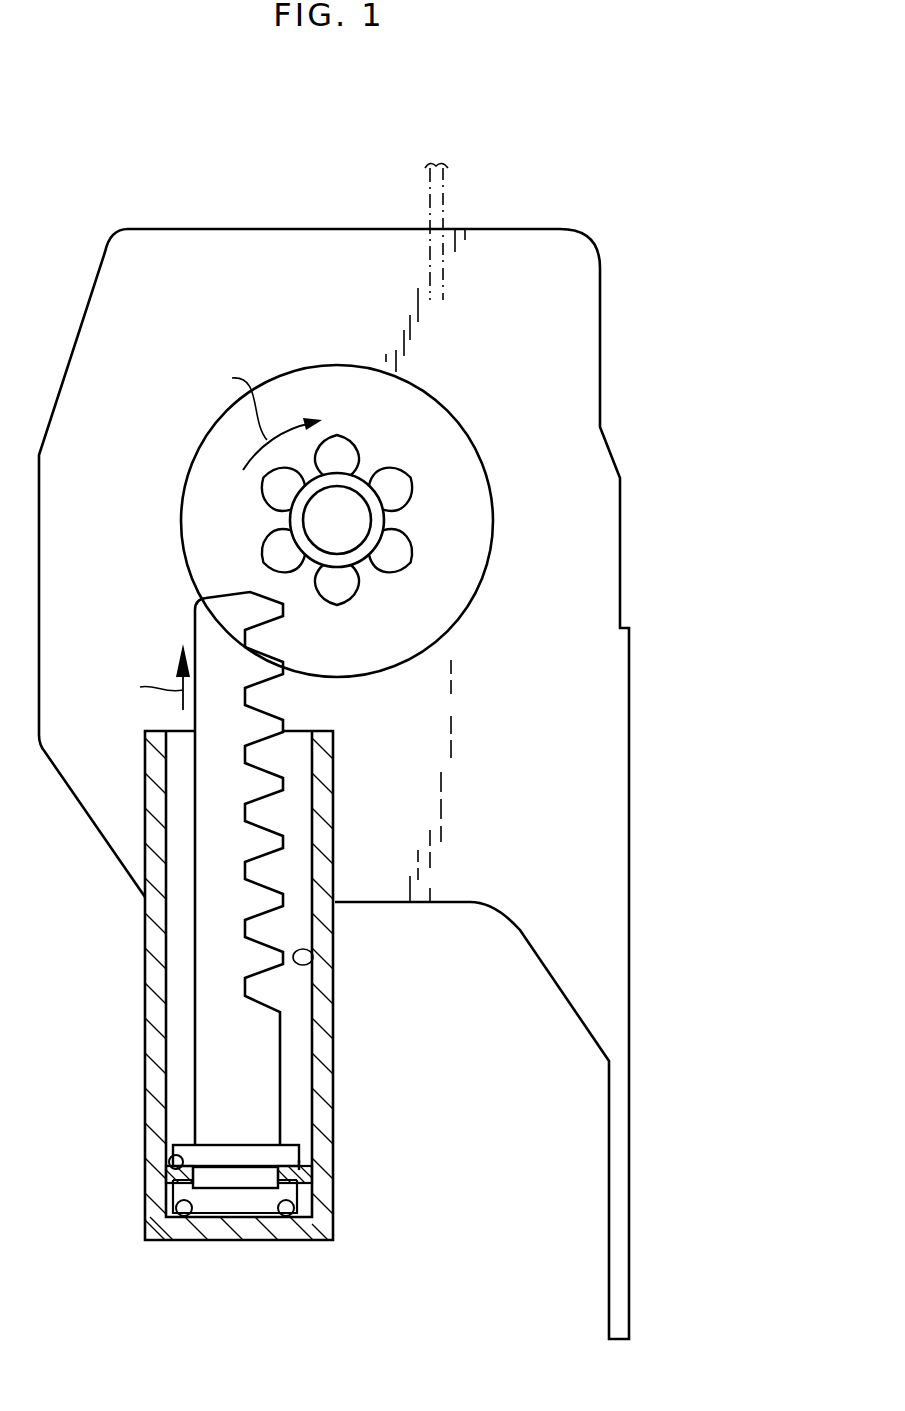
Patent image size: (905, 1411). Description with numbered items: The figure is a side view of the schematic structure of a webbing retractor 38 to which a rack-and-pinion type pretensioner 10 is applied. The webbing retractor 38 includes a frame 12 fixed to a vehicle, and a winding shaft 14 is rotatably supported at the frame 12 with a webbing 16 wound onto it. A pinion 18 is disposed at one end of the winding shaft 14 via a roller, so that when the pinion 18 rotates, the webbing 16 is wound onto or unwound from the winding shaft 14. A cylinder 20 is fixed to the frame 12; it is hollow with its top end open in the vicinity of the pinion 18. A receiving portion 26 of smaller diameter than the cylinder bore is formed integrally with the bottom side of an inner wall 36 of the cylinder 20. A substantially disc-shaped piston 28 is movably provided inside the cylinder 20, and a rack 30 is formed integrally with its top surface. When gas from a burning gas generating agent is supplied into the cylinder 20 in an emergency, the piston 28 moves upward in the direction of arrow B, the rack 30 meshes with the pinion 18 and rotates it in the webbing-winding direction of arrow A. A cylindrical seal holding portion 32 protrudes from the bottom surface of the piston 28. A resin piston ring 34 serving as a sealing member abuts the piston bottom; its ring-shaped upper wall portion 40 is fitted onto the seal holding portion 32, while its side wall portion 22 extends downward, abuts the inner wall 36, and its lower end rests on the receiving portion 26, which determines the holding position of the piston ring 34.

The webbing retractor 38 is at (311, 160).
The frame 12 is at (575, 297).
The webbing 16 is at (448, 176).
The pretensioner 10 is at (142, 530).
The winding shaft 14 is at (353, 518).
The pinion 18 is at (343, 457).
The rack 30 is at (248, 735).
The cylinder 20 is at (327, 743).
The inner wall 36 is at (312, 958).
The piston 28 is at (295, 1132).
The piston ring 34 is at (309, 1160).
The side wall portion 22 is at (307, 1192).
The seal holding portion 32 is at (238, 1178).
The receiving portion 26 is at (284, 1218).
The upper wall portion 40 is at (172, 1158).